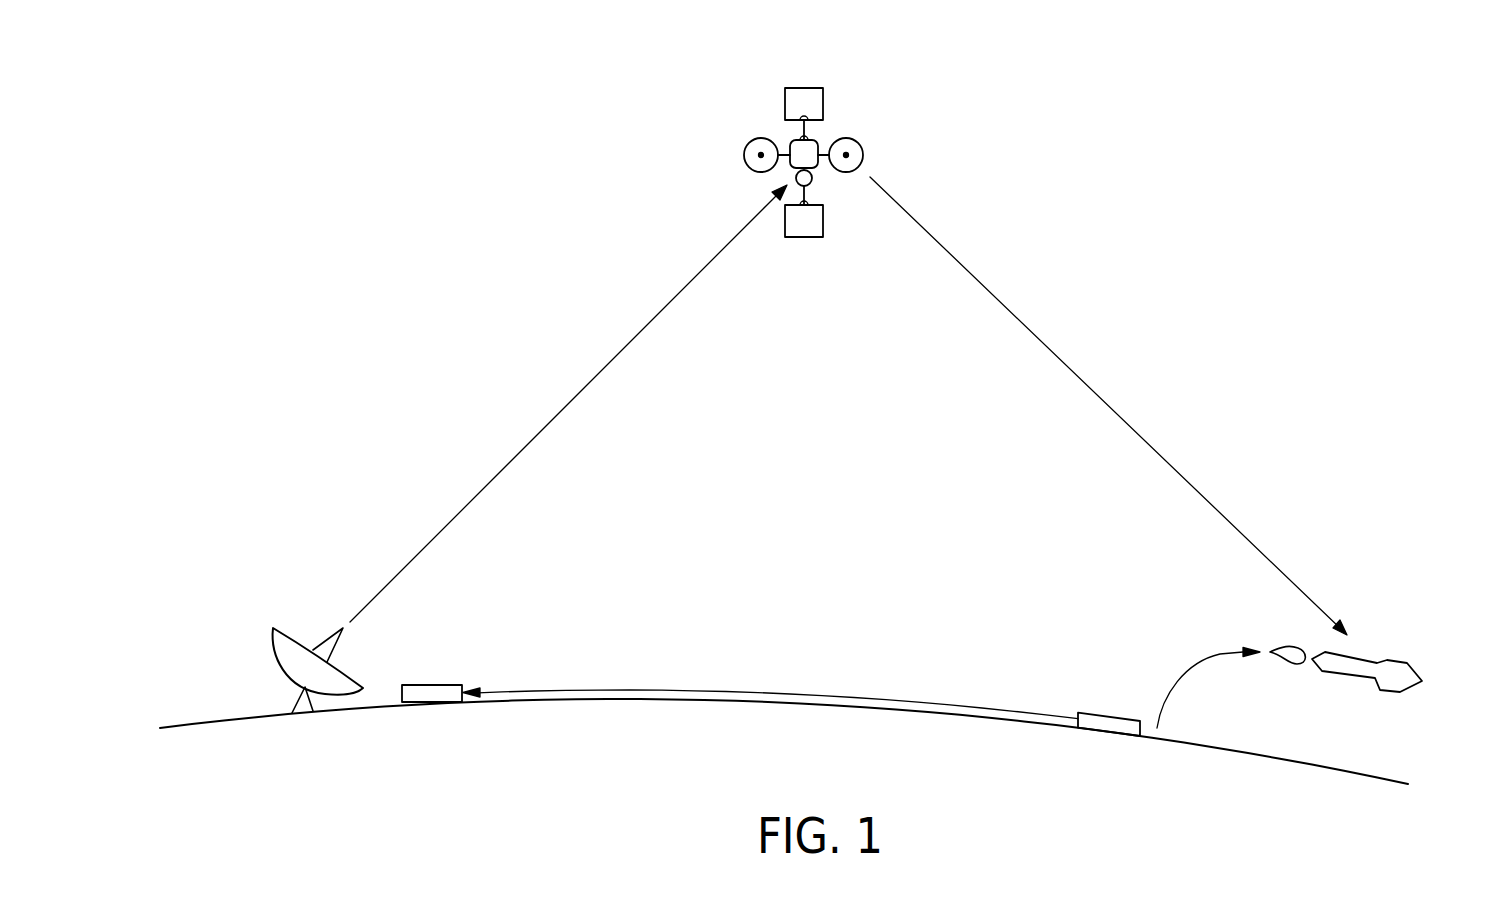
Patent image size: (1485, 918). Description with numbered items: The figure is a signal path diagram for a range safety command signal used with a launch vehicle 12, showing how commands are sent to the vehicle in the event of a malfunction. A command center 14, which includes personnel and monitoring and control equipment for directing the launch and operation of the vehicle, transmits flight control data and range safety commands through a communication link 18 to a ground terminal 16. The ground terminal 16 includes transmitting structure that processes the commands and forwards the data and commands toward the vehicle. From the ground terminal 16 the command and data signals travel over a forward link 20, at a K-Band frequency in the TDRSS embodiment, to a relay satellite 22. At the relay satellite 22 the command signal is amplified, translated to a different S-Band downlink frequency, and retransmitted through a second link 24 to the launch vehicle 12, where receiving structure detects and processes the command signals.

The launch vehicle 12 is at (1403, 675).
The command center 14 is at (1110, 715).
The ground terminal 16 is at (437, 686).
The communication link 18 is at (763, 692).
The forward link 20 is at (519, 449).
The relay satellite 22 is at (823, 100).
The second link 24 is at (1070, 364).